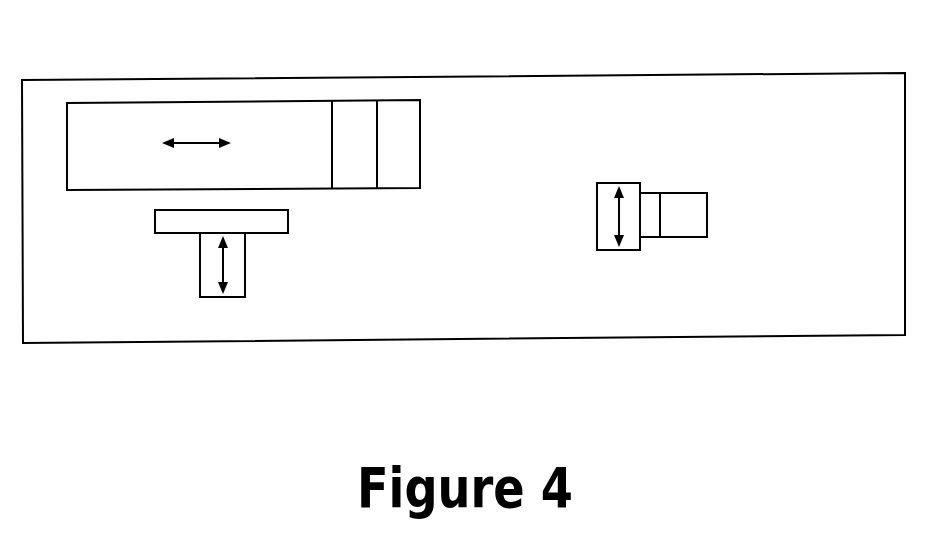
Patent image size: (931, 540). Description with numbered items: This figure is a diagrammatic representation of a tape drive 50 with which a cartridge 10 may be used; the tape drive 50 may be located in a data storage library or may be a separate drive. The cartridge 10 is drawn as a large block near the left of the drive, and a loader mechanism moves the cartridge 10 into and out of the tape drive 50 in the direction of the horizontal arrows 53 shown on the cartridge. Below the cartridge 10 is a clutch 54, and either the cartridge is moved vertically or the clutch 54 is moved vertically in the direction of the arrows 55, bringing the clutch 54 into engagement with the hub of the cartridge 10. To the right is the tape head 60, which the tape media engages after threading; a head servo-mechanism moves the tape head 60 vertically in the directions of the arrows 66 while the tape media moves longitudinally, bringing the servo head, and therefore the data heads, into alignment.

The tape drive 50 is at (707, 73).
The cartridge 10 is at (84, 191).
The arrows 53 is at (194, 142).
The clutch 54 is at (288, 217).
The arrows 55 is at (245, 268).
The arrows 66 is at (617, 220).
The tape head 60 is at (707, 214).